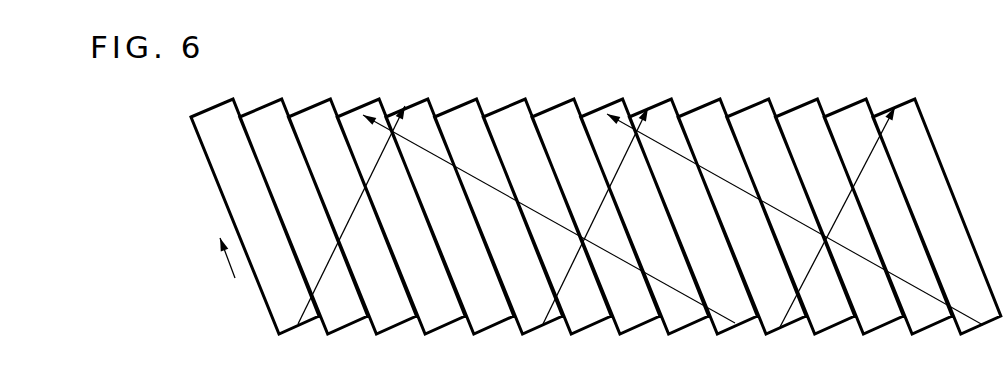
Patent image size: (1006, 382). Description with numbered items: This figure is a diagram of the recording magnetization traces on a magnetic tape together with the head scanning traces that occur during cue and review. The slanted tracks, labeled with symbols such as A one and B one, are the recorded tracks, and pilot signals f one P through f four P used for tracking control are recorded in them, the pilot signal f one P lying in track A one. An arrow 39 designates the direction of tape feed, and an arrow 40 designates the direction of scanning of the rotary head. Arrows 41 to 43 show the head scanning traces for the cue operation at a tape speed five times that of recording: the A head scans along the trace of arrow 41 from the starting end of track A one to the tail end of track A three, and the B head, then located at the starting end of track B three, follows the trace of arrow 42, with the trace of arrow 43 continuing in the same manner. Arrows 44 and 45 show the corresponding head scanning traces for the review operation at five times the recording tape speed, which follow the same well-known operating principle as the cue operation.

The arrow designating the direction of tape feed 39 is at (898, 62).
The arrow designating the direction of scanning of the rotary head 40 is at (227, 262).
The head scanning trace for the cue operation 41 is at (318, 287).
The head scanning trace for the cue operation 42 is at (560, 285).
The head scanning trace for the cue operation 43 is at (803, 284).
The head scanning trace for the review operation 44 is at (920, 292).
The head scanning trace for the review operation 45 is at (680, 291).